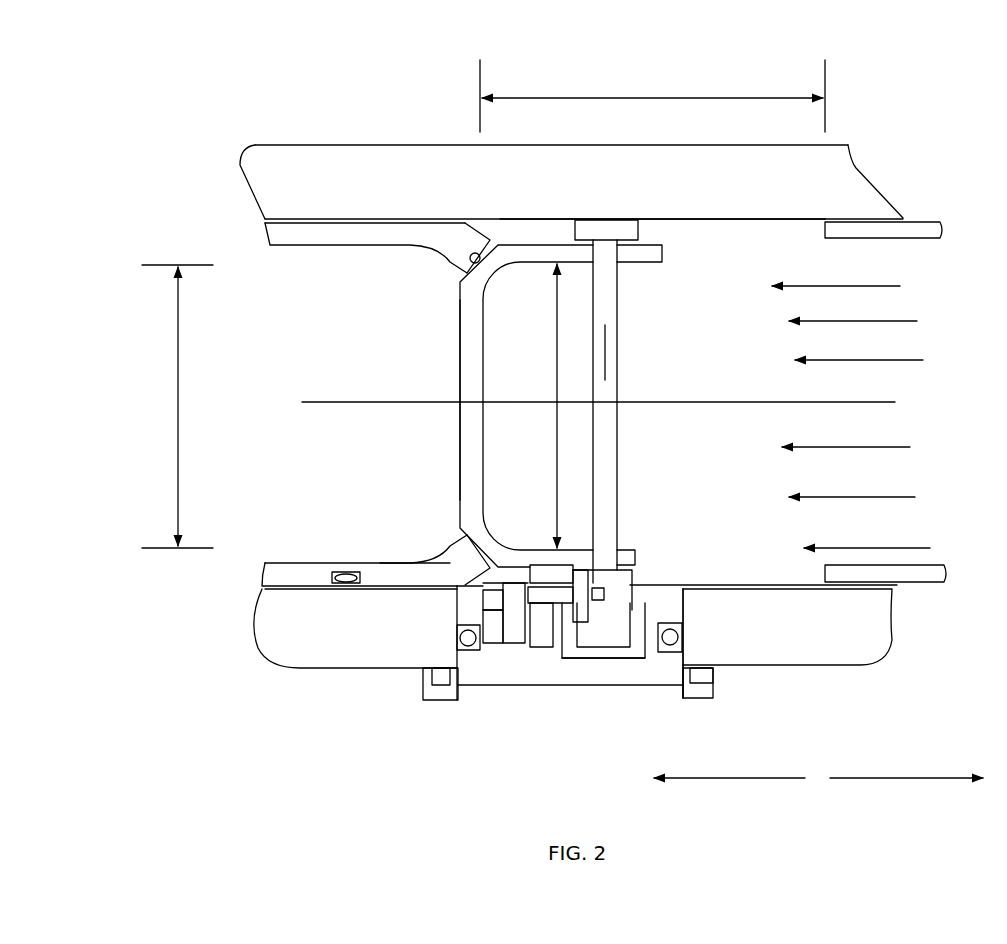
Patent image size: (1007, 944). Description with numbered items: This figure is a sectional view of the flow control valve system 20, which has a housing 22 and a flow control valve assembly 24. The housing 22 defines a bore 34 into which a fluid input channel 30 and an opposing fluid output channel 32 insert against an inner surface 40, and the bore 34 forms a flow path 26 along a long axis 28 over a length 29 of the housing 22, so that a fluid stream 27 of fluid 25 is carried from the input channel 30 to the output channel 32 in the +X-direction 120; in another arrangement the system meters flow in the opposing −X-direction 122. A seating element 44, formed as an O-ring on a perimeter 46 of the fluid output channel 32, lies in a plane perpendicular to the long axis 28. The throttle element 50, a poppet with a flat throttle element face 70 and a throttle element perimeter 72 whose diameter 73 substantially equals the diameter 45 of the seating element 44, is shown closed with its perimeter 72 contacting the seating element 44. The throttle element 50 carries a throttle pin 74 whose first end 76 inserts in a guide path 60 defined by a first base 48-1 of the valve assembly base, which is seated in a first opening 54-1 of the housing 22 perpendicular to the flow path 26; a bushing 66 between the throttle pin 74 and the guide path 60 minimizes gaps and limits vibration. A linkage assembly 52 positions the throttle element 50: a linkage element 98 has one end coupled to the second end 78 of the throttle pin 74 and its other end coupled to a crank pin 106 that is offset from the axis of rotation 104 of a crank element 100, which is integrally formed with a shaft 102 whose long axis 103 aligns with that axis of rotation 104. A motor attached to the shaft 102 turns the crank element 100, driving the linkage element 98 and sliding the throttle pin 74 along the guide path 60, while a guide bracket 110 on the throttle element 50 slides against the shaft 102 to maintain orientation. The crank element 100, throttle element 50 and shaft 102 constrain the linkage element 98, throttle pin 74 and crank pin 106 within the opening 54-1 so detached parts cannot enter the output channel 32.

The flow control valve system 20 is at (856, 104).
The length of the housing 29 is at (710, 98).
The bore 34 is at (518, 222).
The flow path 26 is at (708, 265).
The fluid stream 27 is at (800, 234).
The fluid input channel 30 is at (930, 218).
The guide bracket 110 is at (652, 238).
The seating element 44 is at (468, 248).
The throttle element perimeter 72 is at (460, 265).
The throttle element face 70 is at (455, 325).
The throttle element 50 is at (470, 462).
The diameter of the throttle element perimeter 73 is at (540, 318).
The long axis of the shaft 103 is at (610, 372).
The shaft 102 is at (612, 455).
The fluid 25 is at (883, 321).
The long axis 28 is at (318, 401).
The diameter of the sealing element 45 is at (177, 368).
The crank pin 106 is at (600, 558).
The linkage assembly 52 is at (648, 542).
The linkage element 98 is at (605, 592).
The fluid output channel 32 is at (298, 557).
The perimeter of the fluid output channel 46 is at (433, 572).
The inner surface of the housing 40 is at (724, 577).
The second end of the throttle pin 78 is at (482, 597).
The first end of the throttle pin 76 is at (482, 626).
The housing 22 is at (385, 658).
The throttle pin 74 is at (488, 650).
The flow control valve assembly 24 is at (503, 708).
The guide path 60 is at (527, 650).
The bushing 66 is at (537, 620).
The axis of rotation 104 is at (640, 640).
The first base 48-1 is at (633, 672).
The crank element 100 is at (683, 600).
The first opening 54-1 is at (688, 602).
The +X-direction 120 is at (745, 778).
The −X-direction 122 is at (915, 778).